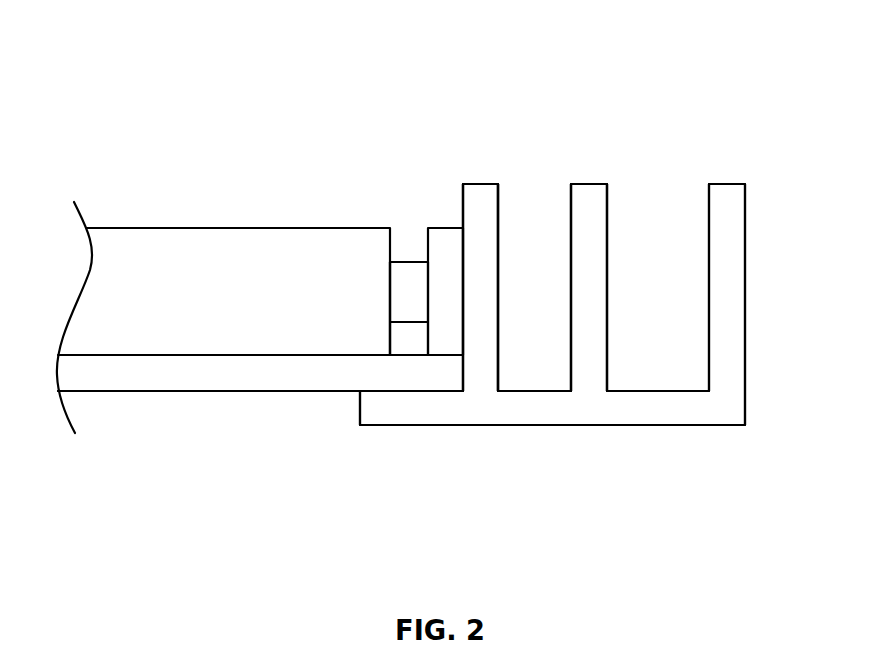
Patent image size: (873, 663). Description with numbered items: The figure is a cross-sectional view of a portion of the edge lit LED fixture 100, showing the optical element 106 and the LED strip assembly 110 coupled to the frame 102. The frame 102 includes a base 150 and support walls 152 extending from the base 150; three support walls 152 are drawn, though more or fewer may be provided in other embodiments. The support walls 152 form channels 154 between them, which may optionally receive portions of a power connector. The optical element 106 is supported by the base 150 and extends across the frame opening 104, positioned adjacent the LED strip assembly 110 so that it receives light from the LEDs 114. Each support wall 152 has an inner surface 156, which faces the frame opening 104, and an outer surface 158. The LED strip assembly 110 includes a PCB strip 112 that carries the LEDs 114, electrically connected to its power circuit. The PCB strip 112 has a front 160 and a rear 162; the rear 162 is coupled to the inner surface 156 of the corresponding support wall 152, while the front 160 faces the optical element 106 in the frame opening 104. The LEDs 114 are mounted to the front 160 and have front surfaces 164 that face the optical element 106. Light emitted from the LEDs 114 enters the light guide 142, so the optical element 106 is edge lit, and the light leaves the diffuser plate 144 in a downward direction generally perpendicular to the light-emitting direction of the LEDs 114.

The edge lit LED fixture 100 is at (700, 73).
The frame 102 is at (745, 397).
The frame opening 104 is at (312, 405).
The optical element 106 is at (212, 393).
The LED strip assembly 110 is at (435, 215).
The PCB strip 112 is at (444, 237).
The LEDs 114 is at (420, 280).
The light guide 142 is at (122, 340).
The diffuser plate 144 is at (168, 382).
The base 150 is at (440, 417).
The support walls 152 is at (488, 267).
The channels 154 is at (527, 367).
The inner surface 156 is at (463, 216).
The outer surface 158 is at (500, 212).
The front 160 is at (425, 340).
The rear 162 is at (465, 344).
The front surfaces 164 is at (388, 295).